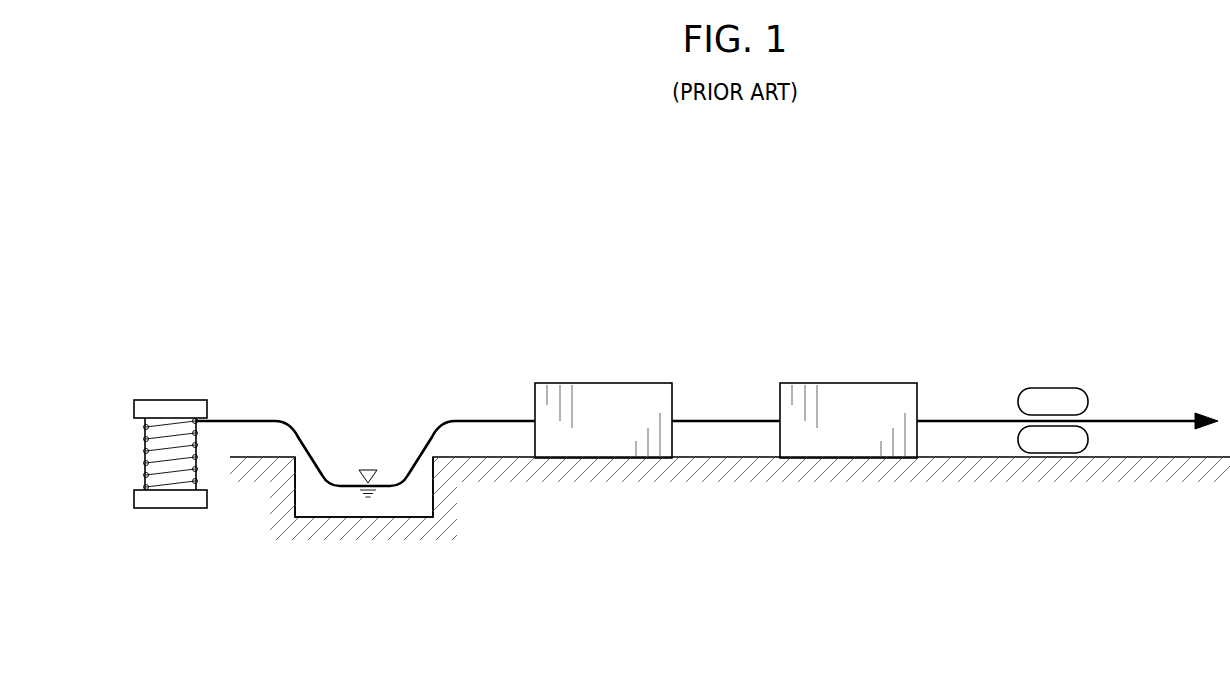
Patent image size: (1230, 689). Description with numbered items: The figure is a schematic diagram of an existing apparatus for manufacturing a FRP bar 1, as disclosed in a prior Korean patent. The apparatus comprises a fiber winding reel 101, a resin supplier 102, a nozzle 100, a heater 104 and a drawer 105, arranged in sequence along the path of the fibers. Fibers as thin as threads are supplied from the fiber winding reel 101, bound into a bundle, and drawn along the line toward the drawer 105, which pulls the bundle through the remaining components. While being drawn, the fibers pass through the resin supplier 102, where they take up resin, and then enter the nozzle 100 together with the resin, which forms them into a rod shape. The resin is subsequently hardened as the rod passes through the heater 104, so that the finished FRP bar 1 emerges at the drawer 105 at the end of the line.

The FRP bar 1 is at (1135, 420).
The nozzle 100 is at (603, 383).
The fiber winding reel 101 is at (170, 400).
The resin supplier 102 is at (433, 487).
The heater 104 is at (848, 383).
The drawer 105 is at (1053, 388).